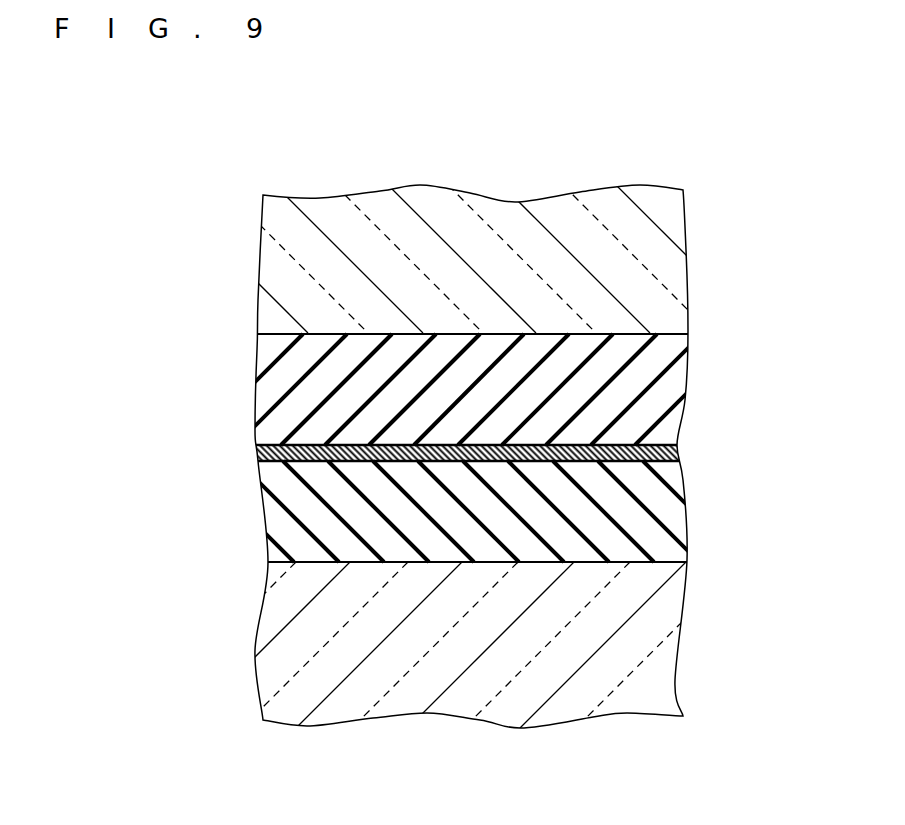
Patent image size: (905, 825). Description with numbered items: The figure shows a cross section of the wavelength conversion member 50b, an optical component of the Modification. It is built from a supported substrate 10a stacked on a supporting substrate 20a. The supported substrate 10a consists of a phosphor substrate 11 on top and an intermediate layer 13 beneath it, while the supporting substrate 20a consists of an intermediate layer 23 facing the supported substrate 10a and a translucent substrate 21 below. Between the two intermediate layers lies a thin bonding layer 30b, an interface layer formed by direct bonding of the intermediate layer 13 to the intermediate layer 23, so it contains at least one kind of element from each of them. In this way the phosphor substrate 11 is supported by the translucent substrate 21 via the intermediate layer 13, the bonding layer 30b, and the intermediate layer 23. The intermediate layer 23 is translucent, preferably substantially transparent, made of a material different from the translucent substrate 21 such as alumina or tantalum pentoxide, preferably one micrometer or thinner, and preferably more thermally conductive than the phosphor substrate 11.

The wavelength conversion member 50b is at (261, 140).
The phosphor substrate 11 is at (278, 269).
The intermediate layer 13 is at (278, 385).
The supported substrate 10a is at (698, 192).
The bonding layer 30b is at (683, 452).
The intermediate layer 23 is at (278, 521).
The translucent substrate 21 is at (278, 628).
The supporting substrate 20a is at (698, 458).